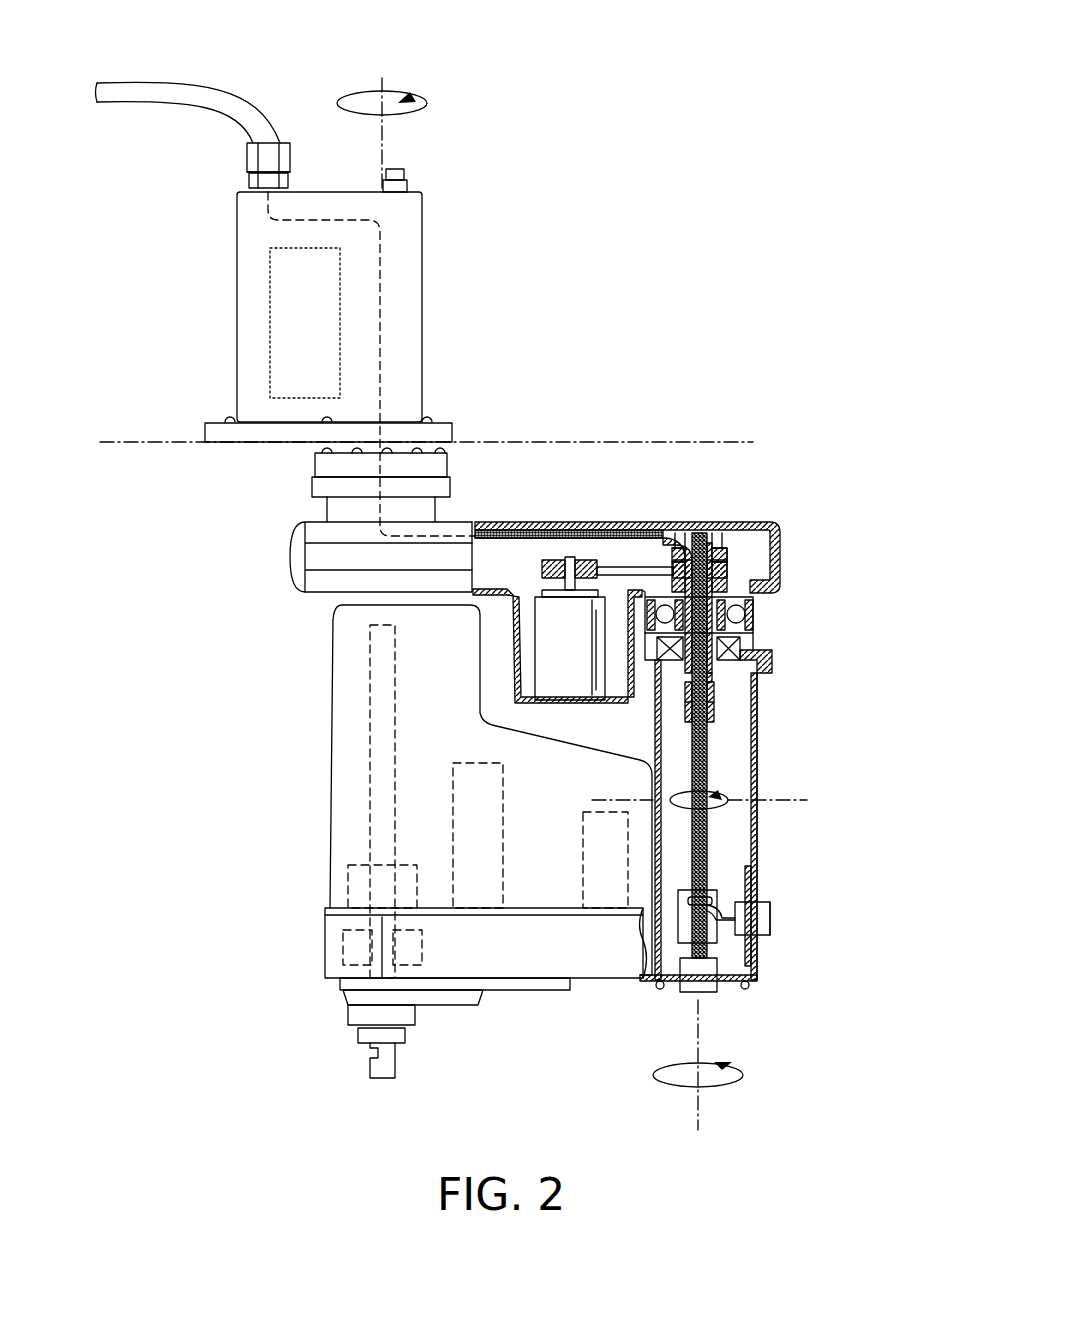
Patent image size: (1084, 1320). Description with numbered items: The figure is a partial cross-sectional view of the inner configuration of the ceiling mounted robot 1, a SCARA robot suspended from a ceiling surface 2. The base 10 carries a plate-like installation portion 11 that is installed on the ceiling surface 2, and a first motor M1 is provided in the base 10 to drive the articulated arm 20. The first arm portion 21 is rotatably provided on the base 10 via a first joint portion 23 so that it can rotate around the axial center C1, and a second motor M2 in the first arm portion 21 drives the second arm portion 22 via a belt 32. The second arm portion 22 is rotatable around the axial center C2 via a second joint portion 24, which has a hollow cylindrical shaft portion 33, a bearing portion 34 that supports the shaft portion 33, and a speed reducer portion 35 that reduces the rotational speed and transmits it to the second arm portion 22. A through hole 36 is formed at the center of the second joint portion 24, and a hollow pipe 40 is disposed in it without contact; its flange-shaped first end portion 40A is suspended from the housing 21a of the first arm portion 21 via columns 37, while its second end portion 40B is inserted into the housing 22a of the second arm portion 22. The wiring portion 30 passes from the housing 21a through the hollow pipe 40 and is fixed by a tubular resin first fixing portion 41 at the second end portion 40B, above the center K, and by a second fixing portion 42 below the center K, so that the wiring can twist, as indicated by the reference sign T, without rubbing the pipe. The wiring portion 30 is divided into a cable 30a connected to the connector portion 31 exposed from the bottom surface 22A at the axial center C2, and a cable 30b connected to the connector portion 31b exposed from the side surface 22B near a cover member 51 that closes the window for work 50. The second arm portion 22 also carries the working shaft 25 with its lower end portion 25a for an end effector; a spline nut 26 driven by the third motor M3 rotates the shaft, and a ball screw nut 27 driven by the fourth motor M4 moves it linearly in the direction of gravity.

The ceiling mounted robot 1 is at (303, 86).
The ceiling surface 2 is at (142, 440).
The base 10 is at (235, 278).
The installation portion 11 is at (213, 420).
The first motor M1 is at (280, 247).
The axial center C1 is at (382, 143).
The first joint portion 23 is at (308, 472).
The articulated arm 20 is at (283, 560).
The working shaft 25 is at (370, 748).
The lower end portion 25a is at (363, 1062).
The spline nut 26 is at (348, 880).
The ball screw nut 27 is at (343, 948).
The fourth motor M4 is at (503, 873).
The third motor M3 is at (583, 867).
The second motor M2 is at (535, 600).
The through hole 36 is at (663, 657).
The belt 32 is at (633, 560).
The first arm portion 21 is at (625, 522).
The housing 21a is at (600, 530).
The wiring portion 30 is at (573, 530).
The connector portion 31 is at (708, 993).
The connector portion 31b is at (770, 922).
The columns 37 is at (712, 545).
The shaft portion 33 is at (727, 562).
The bearing portion 34 is at (727, 582).
The first end portion 40A is at (745, 548).
The second joint portion 24 is at (762, 620).
The hollow pipe 40 is at (745, 612).
The speed reducer portion 35 is at (740, 648).
The second arm portion 22 is at (757, 730).
The housing 22a is at (760, 770).
The side surface 22B is at (760, 790).
The second end portion 40B is at (722, 675).
The first fixing portion 41 is at (718, 708).
The center K is at (807, 800).
The twist T is at (707, 808).
The second fixing portion 42 is at (722, 886).
The cable 30b is at (723, 913).
The cover member 51 is at (770, 910).
The window for work 50 is at (758, 960).
The cable 30a is at (738, 987).
The bottom surface 22A is at (652, 990).
The axial center C2 is at (698, 1032).